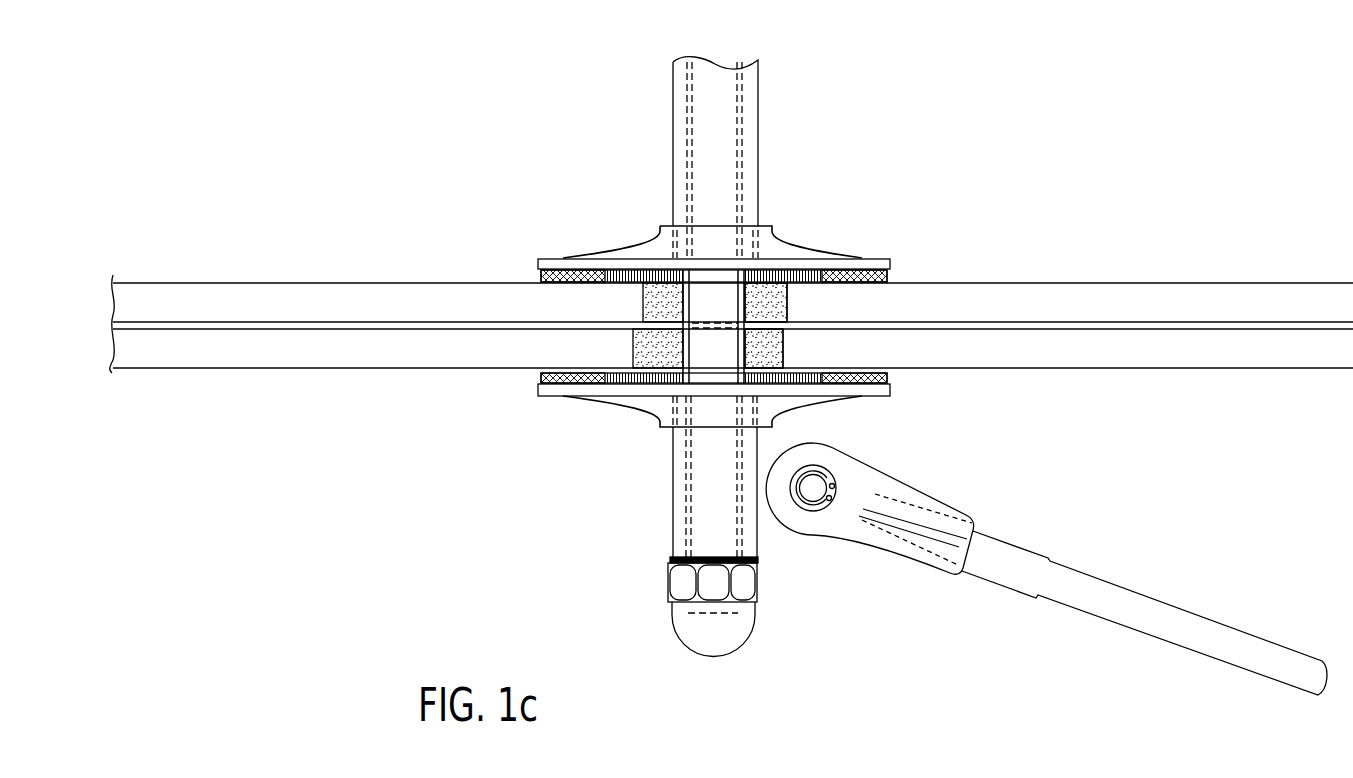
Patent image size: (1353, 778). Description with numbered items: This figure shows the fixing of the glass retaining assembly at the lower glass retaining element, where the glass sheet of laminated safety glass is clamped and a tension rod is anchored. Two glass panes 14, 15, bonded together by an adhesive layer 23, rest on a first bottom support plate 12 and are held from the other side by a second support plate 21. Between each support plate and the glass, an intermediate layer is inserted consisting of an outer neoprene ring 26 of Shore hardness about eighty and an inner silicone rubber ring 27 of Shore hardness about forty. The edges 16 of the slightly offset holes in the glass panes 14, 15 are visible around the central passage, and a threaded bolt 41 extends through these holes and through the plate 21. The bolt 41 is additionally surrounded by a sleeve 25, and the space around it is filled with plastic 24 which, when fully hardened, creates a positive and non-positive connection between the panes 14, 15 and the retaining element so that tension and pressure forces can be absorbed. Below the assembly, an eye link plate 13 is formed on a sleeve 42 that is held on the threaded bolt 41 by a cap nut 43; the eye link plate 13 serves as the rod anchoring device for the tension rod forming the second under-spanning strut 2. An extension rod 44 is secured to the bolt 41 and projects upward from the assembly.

The under-spanning strut 2 is at (1112, 590).
The first bottom support plate 12 is at (562, 403).
The eye link plate 13 is at (782, 533).
The glass pane 14 is at (1218, 303).
The glass pane 15 is at (1218, 350).
The edges of the offset holes 16 is at (785, 348).
The second support plate 21 is at (557, 260).
The adhesive layer 23 is at (1310, 332).
The plastic 24 is at (765, 302).
The sleeve 25 is at (747, 355).
The outer neoprene ring 26 is at (538, 272).
The inner silicone rubber ring 27 is at (638, 273).
The threaded bolt 41 is at (675, 497).
The sleeve 42 is at (670, 537).
The cap nut 43 is at (677, 587).
The extension rod 44 is at (752, 125).